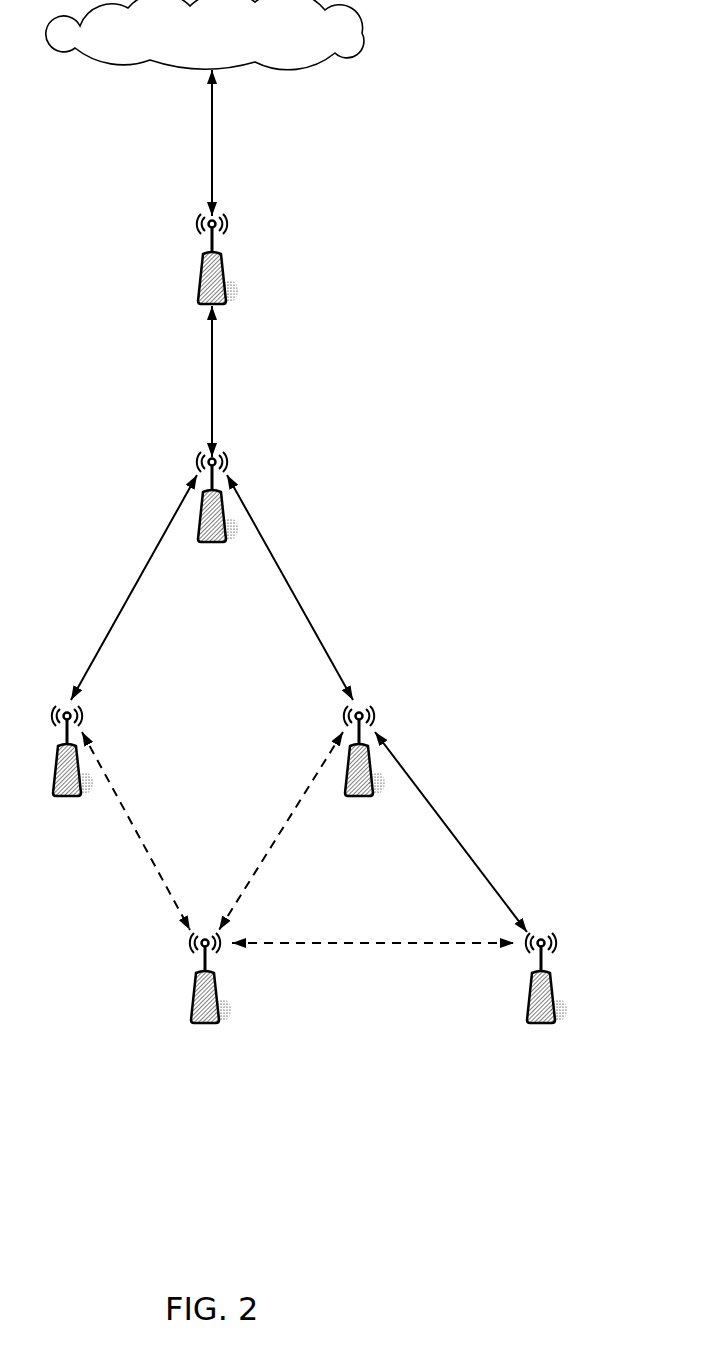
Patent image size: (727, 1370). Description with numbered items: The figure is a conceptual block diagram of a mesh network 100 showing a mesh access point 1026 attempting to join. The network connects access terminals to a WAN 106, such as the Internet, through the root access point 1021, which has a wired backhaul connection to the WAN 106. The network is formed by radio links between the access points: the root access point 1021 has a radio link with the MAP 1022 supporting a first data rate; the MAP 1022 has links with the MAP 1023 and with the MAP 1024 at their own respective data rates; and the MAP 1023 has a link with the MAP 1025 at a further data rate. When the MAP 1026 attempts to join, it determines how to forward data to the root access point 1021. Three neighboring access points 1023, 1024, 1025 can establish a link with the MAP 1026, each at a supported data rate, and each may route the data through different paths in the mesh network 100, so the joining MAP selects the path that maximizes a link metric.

The mesh network 100 is at (566, 82).
The WAN 106 is at (229, 60).
The root access point (RAP) 1021 is at (264, 286).
The mesh access point (MAP) 1022 is at (229, 563).
The mesh access point (MAP) 1023 is at (374, 826).
The mesh access point (MAP) 1024 is at (82, 825).
The mesh access point (MAP) 1025 is at (594, 1004).
The mesh access point (MAP) 1026 is at (220, 1058).